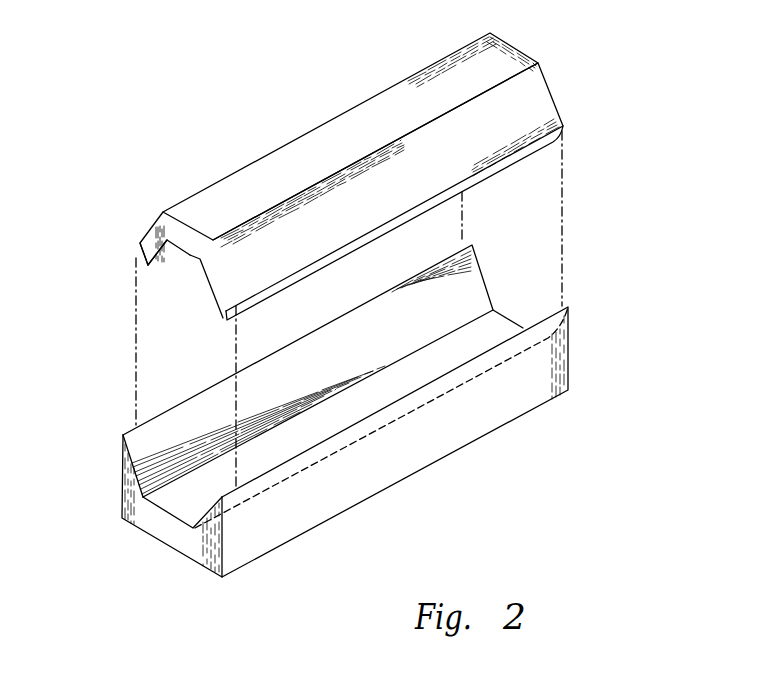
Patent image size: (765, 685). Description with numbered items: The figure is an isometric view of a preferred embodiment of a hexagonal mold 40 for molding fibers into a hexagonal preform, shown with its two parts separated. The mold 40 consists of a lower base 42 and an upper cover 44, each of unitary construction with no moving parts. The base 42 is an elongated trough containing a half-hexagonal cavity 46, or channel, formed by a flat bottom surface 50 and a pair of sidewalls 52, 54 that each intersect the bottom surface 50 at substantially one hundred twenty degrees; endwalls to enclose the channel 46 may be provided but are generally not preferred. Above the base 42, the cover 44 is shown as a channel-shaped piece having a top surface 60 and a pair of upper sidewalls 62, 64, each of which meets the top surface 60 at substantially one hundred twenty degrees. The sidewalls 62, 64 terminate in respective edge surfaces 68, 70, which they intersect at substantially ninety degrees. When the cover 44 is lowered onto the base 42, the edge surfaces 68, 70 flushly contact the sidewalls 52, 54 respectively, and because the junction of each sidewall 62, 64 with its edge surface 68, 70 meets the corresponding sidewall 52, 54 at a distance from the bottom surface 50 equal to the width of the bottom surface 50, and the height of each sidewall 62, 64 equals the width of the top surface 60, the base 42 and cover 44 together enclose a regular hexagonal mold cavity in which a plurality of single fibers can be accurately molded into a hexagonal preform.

The hexagonal mold 40 is at (597, 336).
The lower base 42 is at (449, 469).
The upper cover 44 is at (308, 104).
The half-hexagonal cavity 46 is at (446, 346).
The bottom surface 50 is at (364, 414).
The sidewall 52 is at (274, 411).
The sidewall 54 is at (283, 476).
The top surface 60 is at (181, 251).
The upper sidewall 62 is at (166, 264).
The upper sidewall 64 is at (213, 293).
The edge surface 68 is at (140, 257).
The edge surface 70 is at (243, 309).